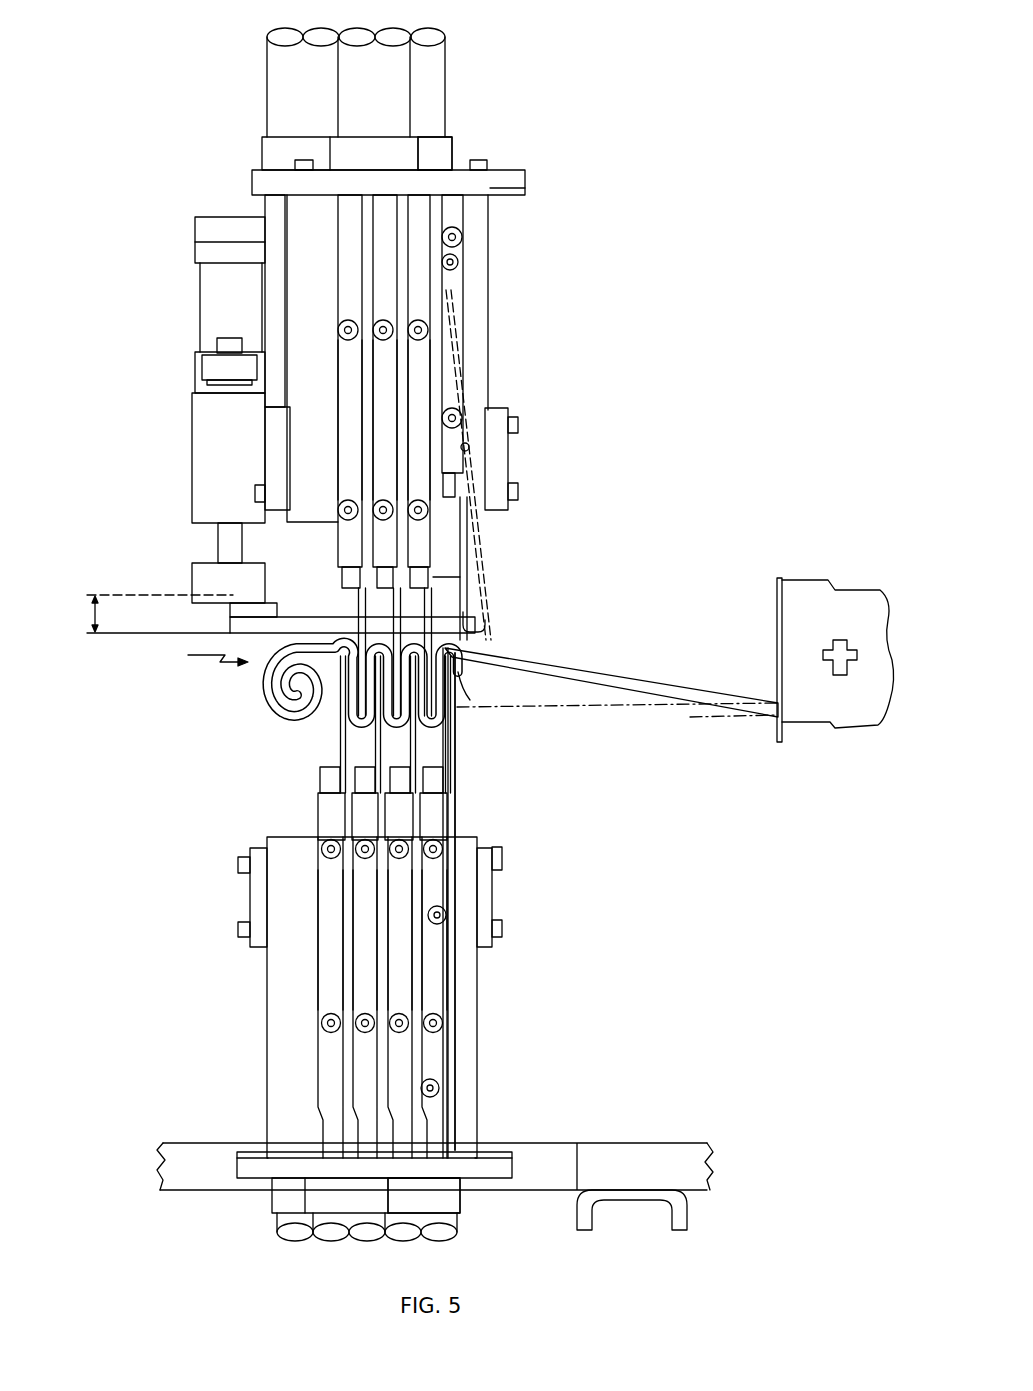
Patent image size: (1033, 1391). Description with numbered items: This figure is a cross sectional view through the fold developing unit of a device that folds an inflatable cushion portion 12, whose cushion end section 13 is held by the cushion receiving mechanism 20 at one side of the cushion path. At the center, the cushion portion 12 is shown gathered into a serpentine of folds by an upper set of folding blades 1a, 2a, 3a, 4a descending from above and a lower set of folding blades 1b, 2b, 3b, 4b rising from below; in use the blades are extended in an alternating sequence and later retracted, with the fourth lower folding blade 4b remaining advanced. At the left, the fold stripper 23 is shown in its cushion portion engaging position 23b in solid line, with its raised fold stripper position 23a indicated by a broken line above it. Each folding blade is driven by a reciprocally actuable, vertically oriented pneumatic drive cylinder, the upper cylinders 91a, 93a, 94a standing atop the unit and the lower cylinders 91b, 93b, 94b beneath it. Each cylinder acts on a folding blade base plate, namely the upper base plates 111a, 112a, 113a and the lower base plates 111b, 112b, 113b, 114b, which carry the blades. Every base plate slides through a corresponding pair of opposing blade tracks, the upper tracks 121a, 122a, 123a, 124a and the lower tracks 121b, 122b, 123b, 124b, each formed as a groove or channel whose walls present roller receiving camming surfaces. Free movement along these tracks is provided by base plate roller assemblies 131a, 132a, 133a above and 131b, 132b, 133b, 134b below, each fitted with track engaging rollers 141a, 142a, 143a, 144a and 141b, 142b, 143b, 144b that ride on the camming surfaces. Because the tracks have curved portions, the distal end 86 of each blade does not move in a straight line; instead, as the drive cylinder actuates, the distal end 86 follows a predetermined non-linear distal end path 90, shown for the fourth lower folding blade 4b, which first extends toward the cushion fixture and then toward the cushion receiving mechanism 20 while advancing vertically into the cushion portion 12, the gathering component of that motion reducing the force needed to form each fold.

The first upper folding blade 1a is at (365, 600).
The second upper folding blade 2a is at (400, 598).
The third upper folding blade 3a is at (433, 577).
The fourth upper folding blade 4a is at (470, 543).
The first lower folding blade 1b is at (343, 737).
The second lower folding blade 2b is at (378, 752).
The third lower folding blade 3b is at (455, 775).
The fourth lower folding blade 4b is at (465, 787).
The inflatable cushion portion 12 is at (650, 675).
The cushion end section 13 is at (280, 692).
The cushion receiving mechanism 20 is at (200, 656).
The fold stripper 23 is at (192, 407).
The raised fold stripper position 23a is at (100, 592).
The cushion portion engaging position 23b is at (112, 635).
The distal end 86 is at (502, 627).
The distal end path 90 is at (462, 680).
The upper drive cylinder 91a is at (298, 145).
The upper drive cylinder 93a is at (397, 165).
The upper drive cylinder 94a is at (447, 150).
The lower drive cylinder 91b is at (277, 1203).
The lower drive cylinder 93b is at (362, 1205).
The lower drive cylinder 94b is at (440, 1205).
The folding blade base plate 111a is at (342, 575).
The folding blade base plate 112a is at (378, 582).
The folding blade base plate 113a is at (428, 588).
The folding blade base plate 111b is at (327, 778).
The folding blade base plate 112b is at (362, 783).
The folding blade base plate 113b is at (397, 787).
The folding blade base plate 114b is at (435, 782).
The blade track 121a is at (343, 203).
The blade track 122a is at (380, 220).
The blade track 123a is at (418, 205).
The blade track 124a is at (453, 210).
The blade track 121b is at (327, 1087).
The blade track 122b is at (362, 1053).
The blade track 123b is at (400, 1055).
The blade track 124b is at (435, 1128).
The base plate roller assembly 131a is at (348, 343).
The base plate roller assembly 132a is at (383, 360).
The base plate roller assembly 133a is at (413, 375).
The base plate roller assembly 131b is at (328, 958).
The base plate roller assembly 132b is at (365, 967).
The base plate roller assembly 133b is at (403, 962).
The base plate roller assembly 134b is at (435, 977).
The track engaging roller 141a is at (340, 510).
The track engaging roller 142a is at (410, 505).
The track engaging roller 143a is at (375, 500).
The track engaging roller 144a is at (462, 237).
The track engaging roller 141b is at (320, 852).
The track engaging roller 142b is at (356, 858).
The track engaging roller 143b is at (435, 840).
The track engaging roller 144b is at (446, 915).